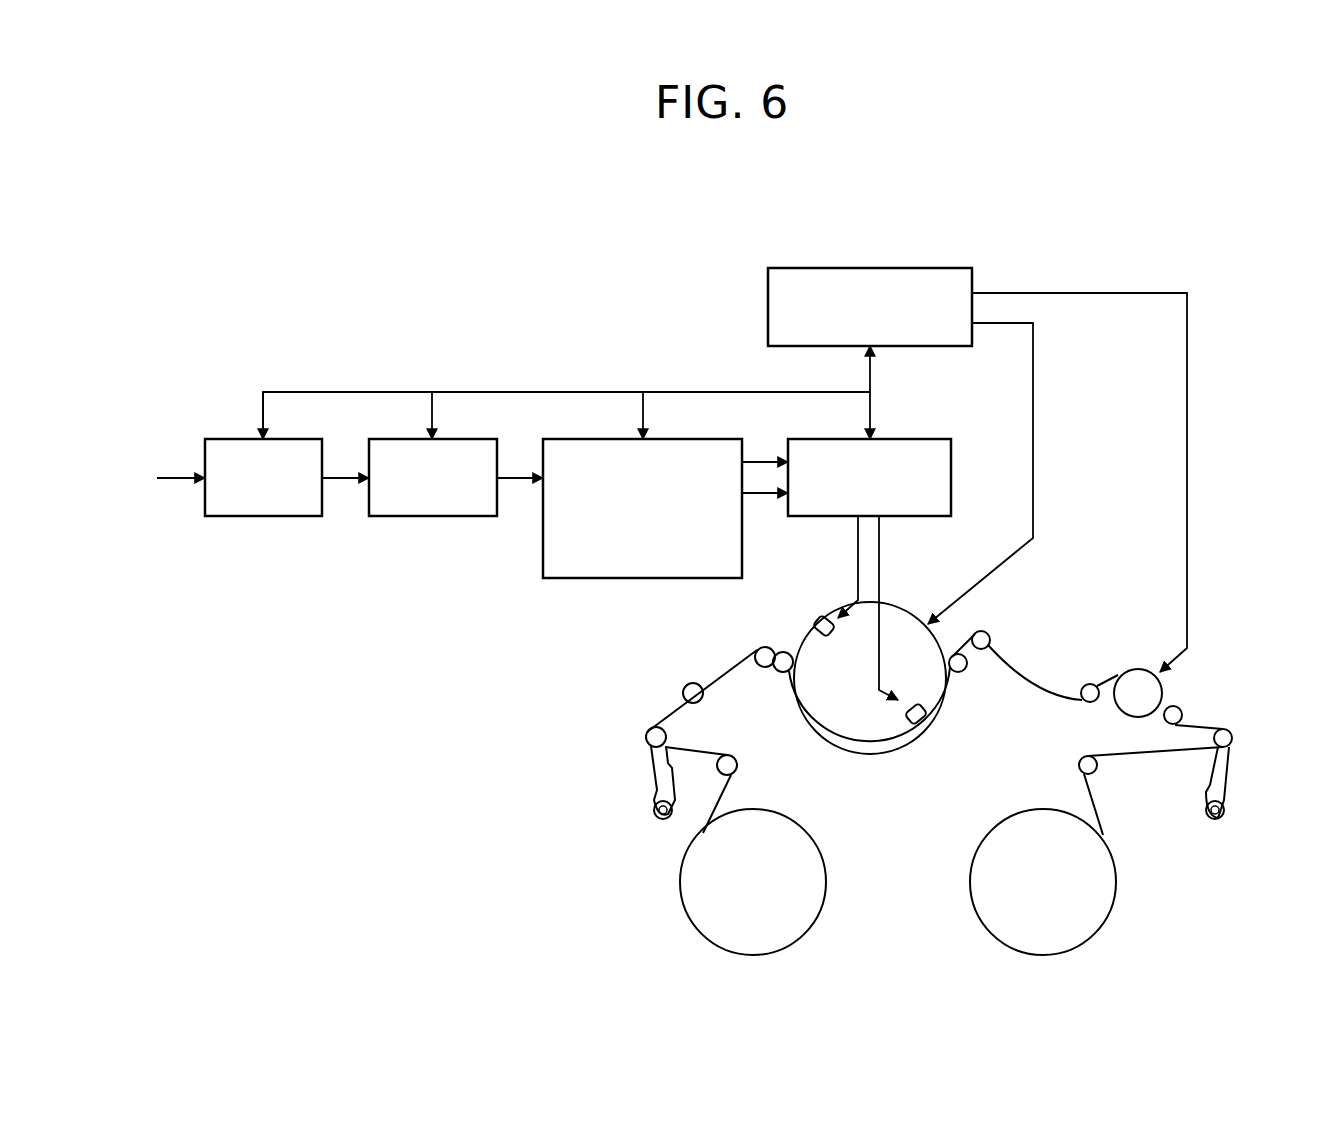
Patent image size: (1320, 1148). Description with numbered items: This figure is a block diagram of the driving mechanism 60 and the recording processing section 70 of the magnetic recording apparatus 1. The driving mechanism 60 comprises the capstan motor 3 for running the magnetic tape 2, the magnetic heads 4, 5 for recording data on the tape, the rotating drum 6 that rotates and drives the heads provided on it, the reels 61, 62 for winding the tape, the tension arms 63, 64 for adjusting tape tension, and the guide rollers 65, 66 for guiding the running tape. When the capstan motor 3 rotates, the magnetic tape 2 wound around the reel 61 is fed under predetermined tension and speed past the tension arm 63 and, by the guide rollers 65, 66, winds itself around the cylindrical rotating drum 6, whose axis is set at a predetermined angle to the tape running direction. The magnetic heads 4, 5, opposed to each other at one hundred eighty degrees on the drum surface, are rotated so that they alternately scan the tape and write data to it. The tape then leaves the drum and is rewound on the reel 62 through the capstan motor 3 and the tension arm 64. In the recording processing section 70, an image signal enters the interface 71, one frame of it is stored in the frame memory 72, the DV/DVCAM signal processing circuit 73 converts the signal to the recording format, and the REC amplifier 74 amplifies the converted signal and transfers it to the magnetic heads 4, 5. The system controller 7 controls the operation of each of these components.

The magnetic recording apparatus 1 is at (1228, 265).
The magnetic tape 2 is at (724, 678).
The capstan motor 3 is at (1145, 692).
The magnetic head 4 is at (818, 620).
The magnetic head 5 is at (922, 722).
The rotating drum 6 is at (838, 712).
The system controller 7 is at (905, 268).
The driving mechanism 60 is at (540, 742).
The reel 61 is at (787, 886).
The reel 62 is at (1012, 857).
The tension arm 63 is at (658, 775).
The tension arm 64 is at (1218, 776).
The guide roller 65 is at (781, 673).
The guide roller 66 is at (962, 672).
The recording processing section 70 is at (367, 345).
The interface 71 is at (278, 520).
The frame memory 72 is at (447, 520).
The DV/DVCAM signal processing circuit 73 is at (590, 582).
The REC amplifier 74 is at (921, 439).